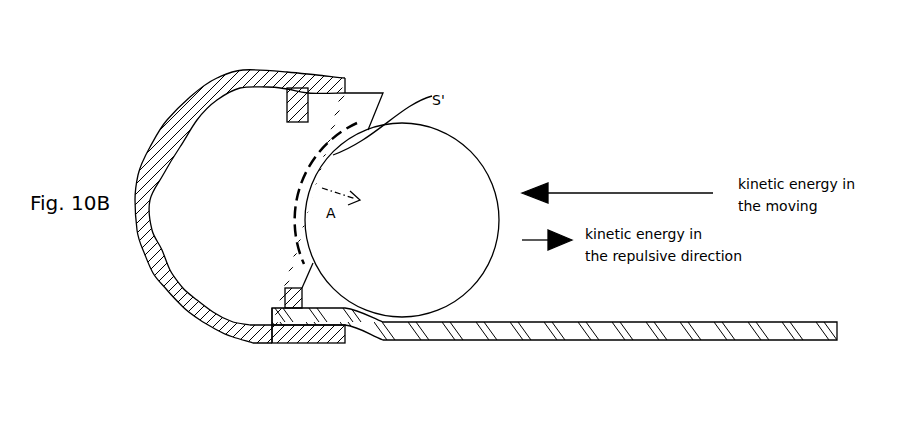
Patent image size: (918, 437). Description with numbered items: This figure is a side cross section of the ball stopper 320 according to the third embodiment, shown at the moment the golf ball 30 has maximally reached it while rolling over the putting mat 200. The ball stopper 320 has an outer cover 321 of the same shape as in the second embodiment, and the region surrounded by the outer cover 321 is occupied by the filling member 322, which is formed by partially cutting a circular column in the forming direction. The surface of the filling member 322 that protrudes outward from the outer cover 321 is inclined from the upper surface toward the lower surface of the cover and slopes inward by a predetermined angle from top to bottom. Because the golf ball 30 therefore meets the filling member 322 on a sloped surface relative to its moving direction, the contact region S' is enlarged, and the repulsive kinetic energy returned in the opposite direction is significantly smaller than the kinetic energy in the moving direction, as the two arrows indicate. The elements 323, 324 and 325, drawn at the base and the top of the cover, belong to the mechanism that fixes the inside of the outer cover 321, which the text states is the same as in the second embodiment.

The ball stopper 320 is at (254, 208).
The outer cover 321 is at (268, 68).
The filling member 322 is at (360, 110).
The lower support block 323 is at (293, 302).
The base block 324 is at (328, 340).
The upper support block 325 is at (298, 93).
The golf ball 30 is at (448, 158).
The putting mat 200 is at (678, 332).